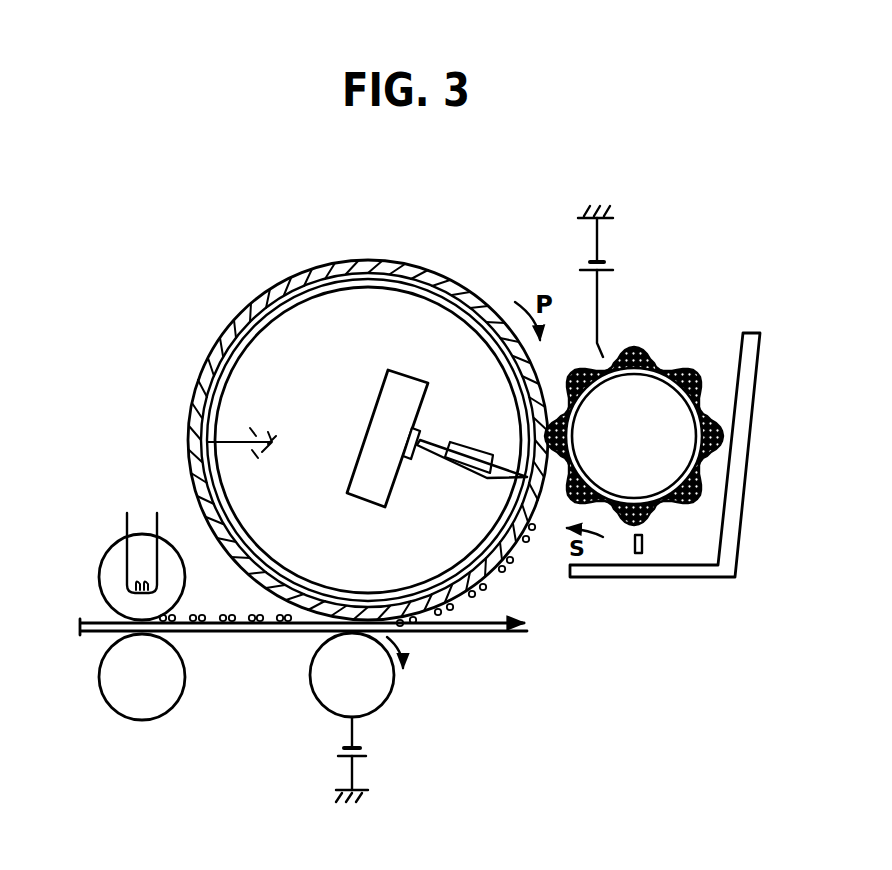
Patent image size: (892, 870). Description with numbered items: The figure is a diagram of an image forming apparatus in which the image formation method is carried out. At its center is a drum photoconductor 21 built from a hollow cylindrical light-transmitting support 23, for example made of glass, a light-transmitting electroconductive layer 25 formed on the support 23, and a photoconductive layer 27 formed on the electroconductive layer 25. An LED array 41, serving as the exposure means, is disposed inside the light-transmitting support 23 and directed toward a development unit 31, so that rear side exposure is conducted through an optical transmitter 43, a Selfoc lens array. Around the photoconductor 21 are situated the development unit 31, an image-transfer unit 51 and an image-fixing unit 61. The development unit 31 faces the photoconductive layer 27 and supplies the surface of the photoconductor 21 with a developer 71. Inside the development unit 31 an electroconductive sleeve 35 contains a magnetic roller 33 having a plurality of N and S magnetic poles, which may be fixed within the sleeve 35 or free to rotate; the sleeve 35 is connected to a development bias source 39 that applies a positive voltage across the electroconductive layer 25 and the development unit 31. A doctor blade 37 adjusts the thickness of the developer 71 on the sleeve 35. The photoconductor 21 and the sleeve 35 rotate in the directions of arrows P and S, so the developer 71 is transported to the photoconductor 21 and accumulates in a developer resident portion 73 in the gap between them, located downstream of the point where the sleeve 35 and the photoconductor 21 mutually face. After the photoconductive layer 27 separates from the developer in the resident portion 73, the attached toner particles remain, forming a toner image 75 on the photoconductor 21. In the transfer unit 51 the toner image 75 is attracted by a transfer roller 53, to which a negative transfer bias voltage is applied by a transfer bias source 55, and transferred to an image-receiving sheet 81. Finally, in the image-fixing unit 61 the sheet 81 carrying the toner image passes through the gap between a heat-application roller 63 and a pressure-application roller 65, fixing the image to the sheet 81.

The drum photoconductor 21 is at (257, 290).
The light-transmitting support 23 is at (347, 300).
The light-transmitting electroconductive layer 25 is at (398, 274).
The photoconductive layer 27 is at (478, 272).
The development unit 31 is at (618, 333).
The magnetic roller 33 is at (648, 380).
The electroconductive sleeve 35 is at (703, 395).
The doctor blade 37 is at (643, 540).
The development bias source 39 is at (607, 262).
The LED array 41 is at (408, 387).
The optical transmitter 43 is at (480, 452).
The image-transfer unit 51 is at (312, 713).
The transfer roller 53 is at (385, 690).
The transfer bias source 55 is at (375, 753).
The image-fixing unit 61 is at (150, 505).
The heat-application roller 63 is at (116, 547).
The pressure-application roller 65 is at (142, 718).
The developer 71 is at (617, 520).
The developer resident portion 73 is at (550, 507).
The toner image 75 is at (490, 583).
The image-receiving sheet 81 is at (240, 634).